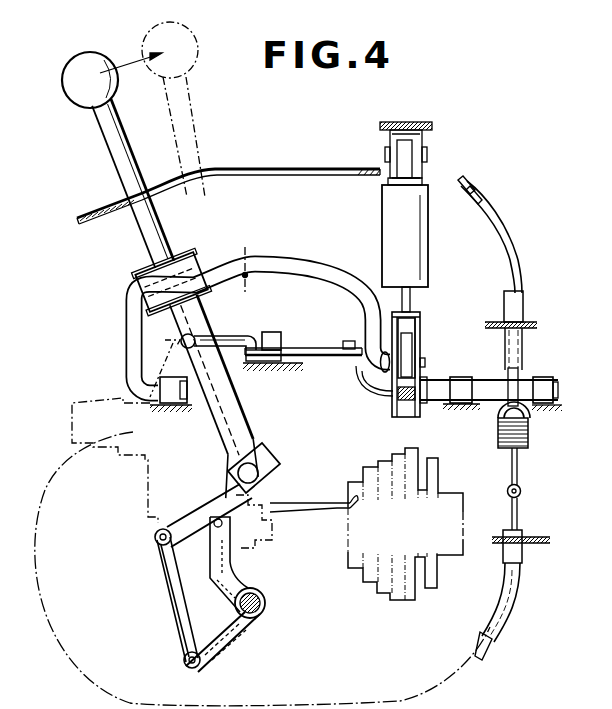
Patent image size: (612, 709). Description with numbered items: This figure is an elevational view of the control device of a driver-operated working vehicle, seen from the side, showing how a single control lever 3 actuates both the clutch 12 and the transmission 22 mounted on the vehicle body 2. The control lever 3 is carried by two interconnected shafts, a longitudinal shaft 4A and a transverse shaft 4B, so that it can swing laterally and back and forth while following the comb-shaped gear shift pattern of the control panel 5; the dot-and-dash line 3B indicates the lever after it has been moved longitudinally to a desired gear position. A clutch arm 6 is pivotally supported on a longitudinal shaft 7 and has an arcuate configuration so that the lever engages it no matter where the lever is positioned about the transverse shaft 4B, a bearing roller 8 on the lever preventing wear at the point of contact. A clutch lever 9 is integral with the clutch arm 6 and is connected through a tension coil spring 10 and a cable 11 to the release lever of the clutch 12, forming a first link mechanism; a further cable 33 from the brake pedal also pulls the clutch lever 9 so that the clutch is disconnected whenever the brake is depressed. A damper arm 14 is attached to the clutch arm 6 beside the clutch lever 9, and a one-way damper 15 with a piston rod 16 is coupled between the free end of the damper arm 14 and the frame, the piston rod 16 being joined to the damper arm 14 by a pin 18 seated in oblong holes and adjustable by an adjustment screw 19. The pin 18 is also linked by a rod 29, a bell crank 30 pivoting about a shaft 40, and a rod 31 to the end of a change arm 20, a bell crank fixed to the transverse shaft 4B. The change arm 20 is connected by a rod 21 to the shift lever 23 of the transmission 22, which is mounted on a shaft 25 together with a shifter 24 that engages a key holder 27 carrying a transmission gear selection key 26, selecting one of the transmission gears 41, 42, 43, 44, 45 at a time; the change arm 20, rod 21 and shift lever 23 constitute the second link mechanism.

The vehicle body 2 is at (430, 125).
The control lever 3 is at (167, 280).
The dot-and-dash line 3B is at (192, 122).
The longitudinal shaft 4A is at (266, 440).
The transverse shaft 4B is at (274, 466).
The control panel 5 is at (245, 251).
The clutch arm 6 is at (236, 297).
The longitudinal shaft 7 is at (166, 410).
The bearing roller 8 is at (128, 300).
The clutch lever 9 is at (503, 413).
The tension coil spring 10 is at (528, 438).
The cable 11 is at (495, 652).
The clutch 12 is at (145, 478).
The damper arm 14 is at (424, 322).
The one-way damper 15 is at (428, 233).
The piston rod 16 is at (418, 297).
The pin 18 is at (424, 362).
The adjustment screw 19 is at (404, 403).
The change arm 20 is at (212, 420).
The rod 21 is at (170, 593).
The transmission 22 is at (380, 612).
The shift lever 23 is at (232, 640).
The shifter 24 is at (240, 577).
The shaft 25 is at (263, 611).
The transmission gear selection key 26 is at (335, 512).
The key holder 27 is at (270, 534).
The rod 29 is at (225, 338).
The bell crank 30 is at (328, 350).
The rod 31 is at (362, 372).
The cable 33 is at (466, 185).
The shaft 40 is at (274, 332).
The transmission gear 41 is at (415, 592).
The transmission gear 42 is at (400, 600).
The transmission gear 43 is at (378, 598).
The transmission gear 44 is at (368, 590).
The transmission gear 45 is at (355, 572).